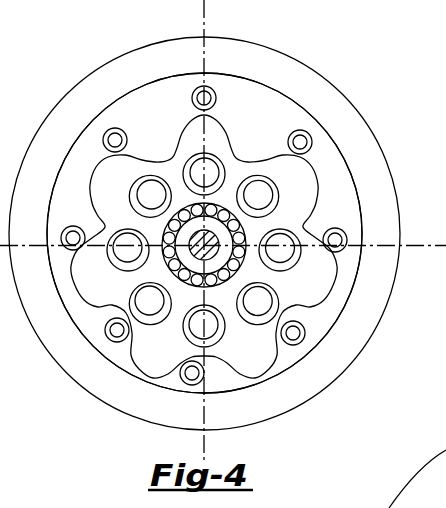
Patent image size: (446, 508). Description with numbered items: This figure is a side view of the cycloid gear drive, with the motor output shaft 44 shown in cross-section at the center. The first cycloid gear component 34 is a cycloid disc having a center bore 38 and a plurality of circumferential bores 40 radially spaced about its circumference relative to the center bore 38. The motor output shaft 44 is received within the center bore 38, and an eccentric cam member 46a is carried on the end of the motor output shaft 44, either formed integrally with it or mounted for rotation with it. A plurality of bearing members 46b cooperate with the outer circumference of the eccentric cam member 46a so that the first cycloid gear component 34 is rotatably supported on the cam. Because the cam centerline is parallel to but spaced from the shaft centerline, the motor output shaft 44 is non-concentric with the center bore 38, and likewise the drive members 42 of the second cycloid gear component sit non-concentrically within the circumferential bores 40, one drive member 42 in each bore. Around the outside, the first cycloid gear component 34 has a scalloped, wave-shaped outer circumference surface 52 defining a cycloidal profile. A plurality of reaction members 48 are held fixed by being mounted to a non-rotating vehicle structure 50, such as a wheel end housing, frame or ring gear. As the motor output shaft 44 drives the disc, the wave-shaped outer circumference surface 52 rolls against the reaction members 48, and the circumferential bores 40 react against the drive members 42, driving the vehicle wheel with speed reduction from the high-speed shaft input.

The first cycloid gear component 34 is at (147, 365).
The center bore 38 is at (177, 319).
The circumferential bores 40 is at (108, 243).
The drive members 42 is at (260, 200).
The motor output shaft 44 is at (220, 242).
The eccentric cam member 46a is at (238, 265).
The bearing members 46b is at (216, 283).
The reaction members 48 is at (192, 98).
The non-rotating vehicle structure 50 is at (313, 93).
The wave-shaped outer circumference surface 52 is at (319, 170).